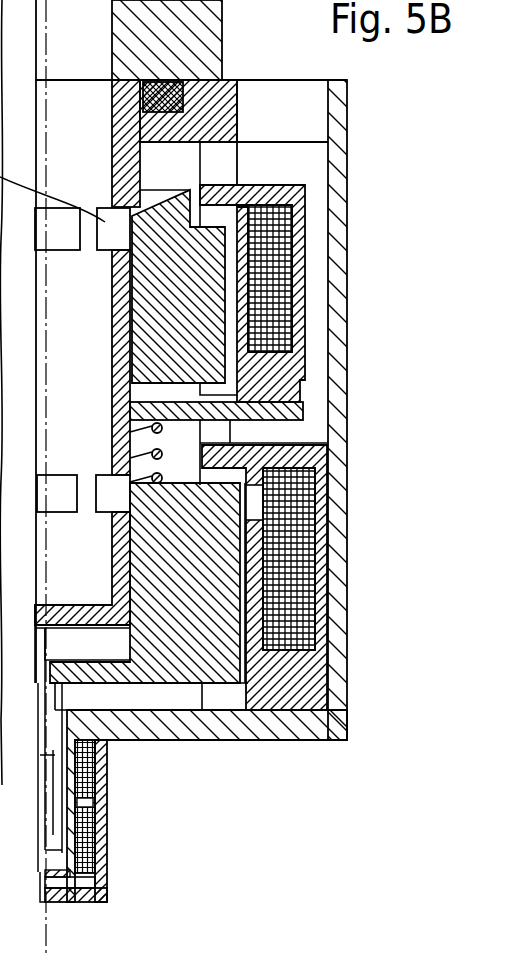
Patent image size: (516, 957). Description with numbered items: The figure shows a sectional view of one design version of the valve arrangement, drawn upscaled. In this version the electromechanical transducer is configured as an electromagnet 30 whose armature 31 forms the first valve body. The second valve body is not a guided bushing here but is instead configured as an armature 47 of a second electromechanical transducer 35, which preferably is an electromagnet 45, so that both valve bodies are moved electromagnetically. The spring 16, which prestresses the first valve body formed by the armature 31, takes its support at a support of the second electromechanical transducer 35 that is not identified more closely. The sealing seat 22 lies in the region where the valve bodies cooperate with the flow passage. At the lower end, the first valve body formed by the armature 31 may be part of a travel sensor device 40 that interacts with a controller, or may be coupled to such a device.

The sealing seat 22 is at (113, 207).
The spring 16 is at (130, 453).
The electromagnet 45 is at (293, 235).
The second electromechanical transducer 35 is at (310, 283).
The armature 47 is at (207, 370).
The electromagnet 30 is at (302, 580).
The armature 31 is at (225, 655).
The travel sensor device 40 is at (53, 835).